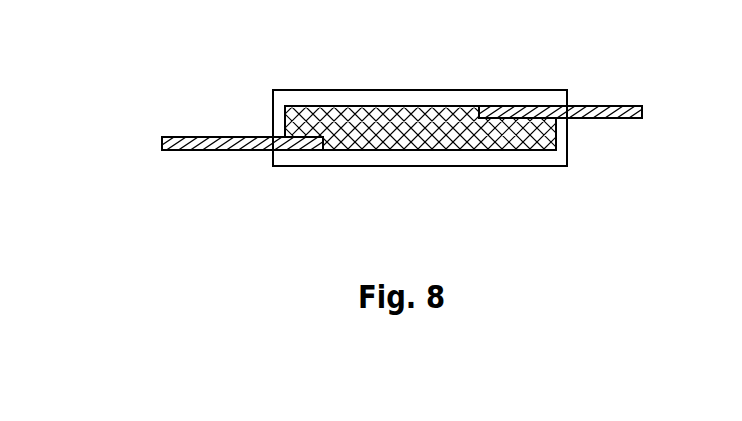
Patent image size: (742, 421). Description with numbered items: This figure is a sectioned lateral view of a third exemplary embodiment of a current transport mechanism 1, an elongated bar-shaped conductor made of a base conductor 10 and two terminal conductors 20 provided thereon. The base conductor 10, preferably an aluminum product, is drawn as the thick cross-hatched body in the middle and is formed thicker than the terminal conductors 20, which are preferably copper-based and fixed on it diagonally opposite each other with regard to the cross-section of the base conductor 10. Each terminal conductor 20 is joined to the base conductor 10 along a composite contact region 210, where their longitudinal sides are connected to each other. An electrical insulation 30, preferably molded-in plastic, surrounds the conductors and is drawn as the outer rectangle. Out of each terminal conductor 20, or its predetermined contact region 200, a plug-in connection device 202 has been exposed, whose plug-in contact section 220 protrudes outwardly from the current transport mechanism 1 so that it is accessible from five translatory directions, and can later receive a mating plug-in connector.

The current transport mechanism 1 is at (413, 78).
The base conductor 10 is at (440, 130).
The terminal conductor 20 is at (388, 114).
The predetermined contact region 200 is at (388, 114).
The plug-in connection device 202 is at (388, 114).
The plug-in contact section 220 is at (182, 142).
The composite contact region 210 is at (297, 138).
The electrical insulation 30 is at (307, 101).